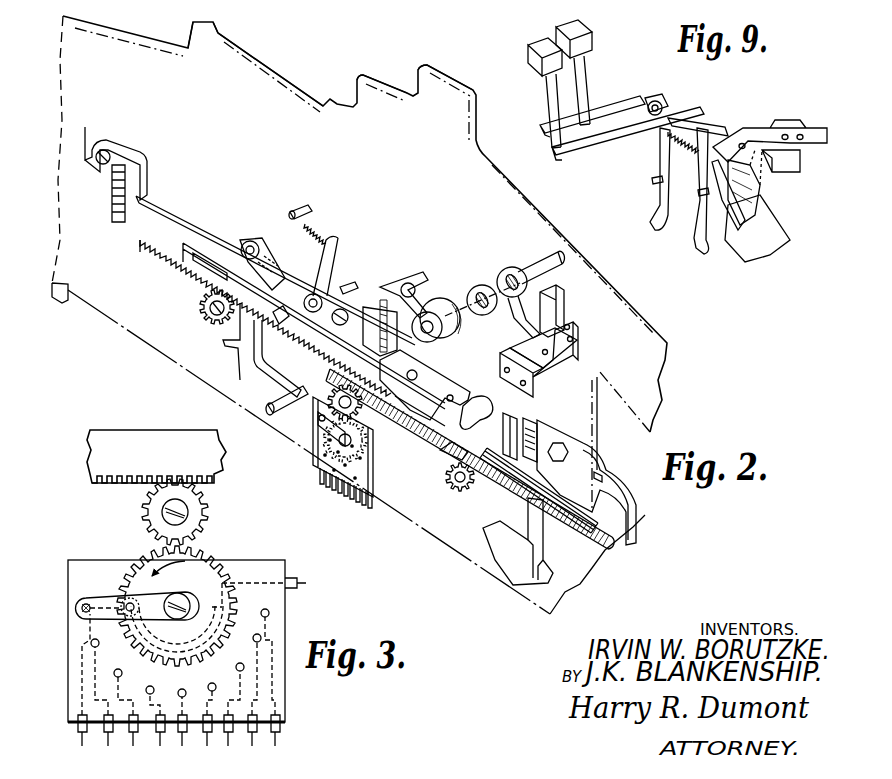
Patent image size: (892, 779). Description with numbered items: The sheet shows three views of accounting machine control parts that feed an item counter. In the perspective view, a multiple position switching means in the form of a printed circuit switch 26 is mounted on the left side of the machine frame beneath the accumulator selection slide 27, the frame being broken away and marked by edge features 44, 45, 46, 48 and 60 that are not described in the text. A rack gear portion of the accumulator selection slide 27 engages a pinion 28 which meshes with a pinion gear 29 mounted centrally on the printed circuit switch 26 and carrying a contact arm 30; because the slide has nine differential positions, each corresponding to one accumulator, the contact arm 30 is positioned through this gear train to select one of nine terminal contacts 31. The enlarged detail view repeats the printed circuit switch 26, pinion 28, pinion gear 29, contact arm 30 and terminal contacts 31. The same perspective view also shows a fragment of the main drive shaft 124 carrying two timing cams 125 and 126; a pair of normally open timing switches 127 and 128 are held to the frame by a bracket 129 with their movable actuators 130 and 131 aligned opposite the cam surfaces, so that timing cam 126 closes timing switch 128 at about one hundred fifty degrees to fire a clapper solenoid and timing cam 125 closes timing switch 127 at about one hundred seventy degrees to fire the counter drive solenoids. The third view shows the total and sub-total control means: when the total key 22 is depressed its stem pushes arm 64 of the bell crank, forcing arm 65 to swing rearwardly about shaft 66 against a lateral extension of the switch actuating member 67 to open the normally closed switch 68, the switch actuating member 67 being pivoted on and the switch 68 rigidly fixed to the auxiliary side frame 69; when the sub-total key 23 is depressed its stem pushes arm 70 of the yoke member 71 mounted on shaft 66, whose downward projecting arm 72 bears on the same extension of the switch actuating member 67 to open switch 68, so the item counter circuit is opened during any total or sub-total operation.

In FIG. 9, the total key 22 is at (592, 40).
In FIG. 9, the sub-total key 23 is at (528, 62).
In FIG. 2, the printed circuit switch 26 is at (378, 488).
In FIG. 3, the printed circuit switch 26 is at (290, 624).
In FIG. 2, the accumulator selection slide 27 is at (287, 347).
In FIG. 2, the pinion 28 is at (366, 416).
In FIG. 3, the pinion 28 is at (212, 515).
In FIG. 2, the pinion gear 29 is at (366, 448).
In FIG. 3, the pinion gear 29 is at (215, 553).
In FIG. 2, the contact arm 30 is at (318, 426).
In FIG. 3, the contact arm 30 is at (100, 596).
In FIG. 2, the terminal contacts 31 is at (360, 498).
In FIG. 3, the terminal contacts 31 is at (104, 738).
In FIG. 2, the frame notch 44 is at (246, 0).
In FIG. 2, the frame notch 45 is at (543, 0).
In FIG. 2, the frame notch 46 is at (278, 0).
In FIG. 2, the frame notch 48 is at (372, 2).
In FIG. 2, the frame edge 60 is at (276, 54).
In FIG. 9, the arm of bell crank 64 is at (602, 115).
In FIG. 9, the arm of bell crank 65 is at (655, 170).
In FIG. 9, the shaft 66 is at (662, 98).
In FIG. 9, the switch actuating member 67 is at (750, 190).
In FIG. 9, the switch 68 is at (790, 168).
In FIG. 9, the auxiliary side frame 69 is at (755, 124).
In FIG. 9, the arm of yoke member 70 is at (598, 150).
In FIG. 9, the yoke member 71 is at (700, 118).
In FIG. 9, the downward projecting arm 72 is at (705, 208).
In FIG. 2, the main drive shaft 124 is at (548, 264).
In FIG. 2, the timing cam 125 is at (478, 288).
In FIG. 2, the timing cam 126 is at (505, 270).
In FIG. 2, the timing switch 127 is at (535, 380).
In FIG. 2, the timing switch 128 is at (562, 345).
In FIG. 2, the bracket 129 is at (548, 360).
In FIG. 2, the movable actuator 130 is at (452, 330).
In FIG. 2, the movable actuator 131 is at (570, 292).